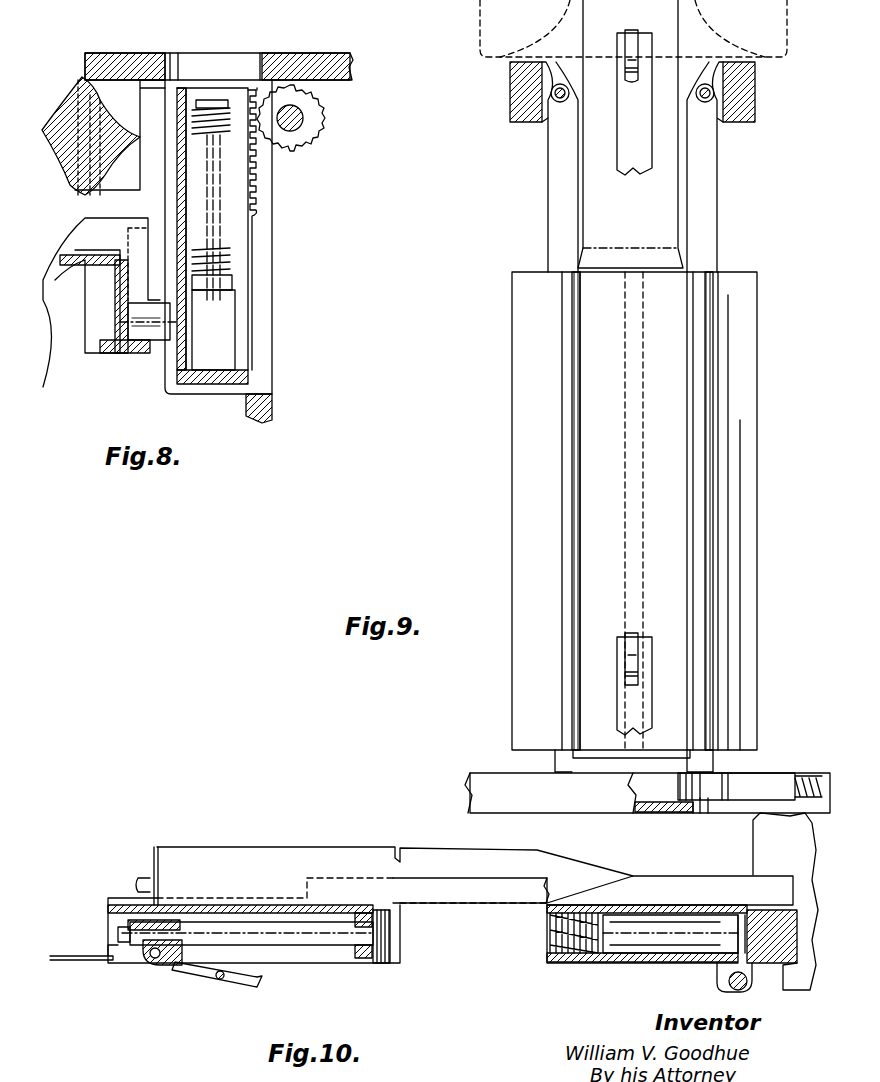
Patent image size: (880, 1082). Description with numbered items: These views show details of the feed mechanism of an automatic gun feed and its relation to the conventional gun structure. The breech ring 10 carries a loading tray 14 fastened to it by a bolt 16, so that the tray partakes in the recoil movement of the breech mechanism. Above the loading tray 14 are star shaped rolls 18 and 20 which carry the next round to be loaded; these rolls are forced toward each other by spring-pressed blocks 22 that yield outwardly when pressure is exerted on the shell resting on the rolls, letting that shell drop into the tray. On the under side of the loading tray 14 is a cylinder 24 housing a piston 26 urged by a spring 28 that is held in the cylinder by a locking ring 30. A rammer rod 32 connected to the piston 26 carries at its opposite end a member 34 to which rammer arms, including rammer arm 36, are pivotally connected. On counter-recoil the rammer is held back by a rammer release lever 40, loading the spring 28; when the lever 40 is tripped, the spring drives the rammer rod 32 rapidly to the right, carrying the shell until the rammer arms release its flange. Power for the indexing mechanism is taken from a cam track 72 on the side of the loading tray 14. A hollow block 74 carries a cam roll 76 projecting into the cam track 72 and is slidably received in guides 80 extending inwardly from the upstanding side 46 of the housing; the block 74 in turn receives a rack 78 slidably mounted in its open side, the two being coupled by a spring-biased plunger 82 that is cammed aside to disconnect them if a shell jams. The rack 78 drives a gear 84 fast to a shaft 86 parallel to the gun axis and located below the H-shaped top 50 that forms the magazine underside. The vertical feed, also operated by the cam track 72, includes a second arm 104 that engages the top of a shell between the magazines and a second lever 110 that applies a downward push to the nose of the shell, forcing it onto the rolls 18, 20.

In FIG. 10, the breech ring 10 is at (785, 901).
In FIG. 8, the loading tray 14 is at (90, 230).
In FIG. 10, the loading tray 14 is at (690, 866).
In FIG. 10, the bolt 16 is at (727, 981).
In FIG. 9, the star shaped roll 18 is at (518, 441).
In FIG. 8, the star shaped roll 20 is at (96, 112).
In FIG. 9, the star shaped roll 20 is at (745, 434).
In FIG. 9, the spring-pressed block 22 is at (760, 775).
In FIG. 10, the cylinder 24 is at (655, 957).
In FIG. 10, the piston 26 is at (590, 955).
In FIG. 10, the spring 28 is at (382, 963).
In FIG. 10, the locking ring 30 is at (355, 953).
In FIG. 10, the rammer rod 32 is at (278, 945).
In FIG. 10, the member 34 is at (142, 955).
In FIG. 10, the rammer arm 36 is at (144, 876).
In FIG. 10, the rammer release lever 40 is at (250, 985).
In FIG. 8, the upstanding side 46 is at (274, 400).
In FIG. 8, the H-shaped top 50 is at (318, 53).
In FIG. 8, the cam track 72 is at (127, 338).
In FIG. 8, the hollow block 74 is at (214, 330).
In FIG. 8, the cam roll 76 is at (125, 316).
In FIG. 8, the rack 78 is at (258, 194).
In FIG. 8, the guide 80 is at (215, 386).
In FIG. 8, the spring-biased plunger 82 is at (226, 270).
In FIG. 8, the gear 84 is at (323, 128).
In FIG. 8, the shaft 86 is at (300, 112).
In FIG. 9, the second arm 104 is at (648, 702).
In FIG. 9, the second lever 110 is at (630, 170).